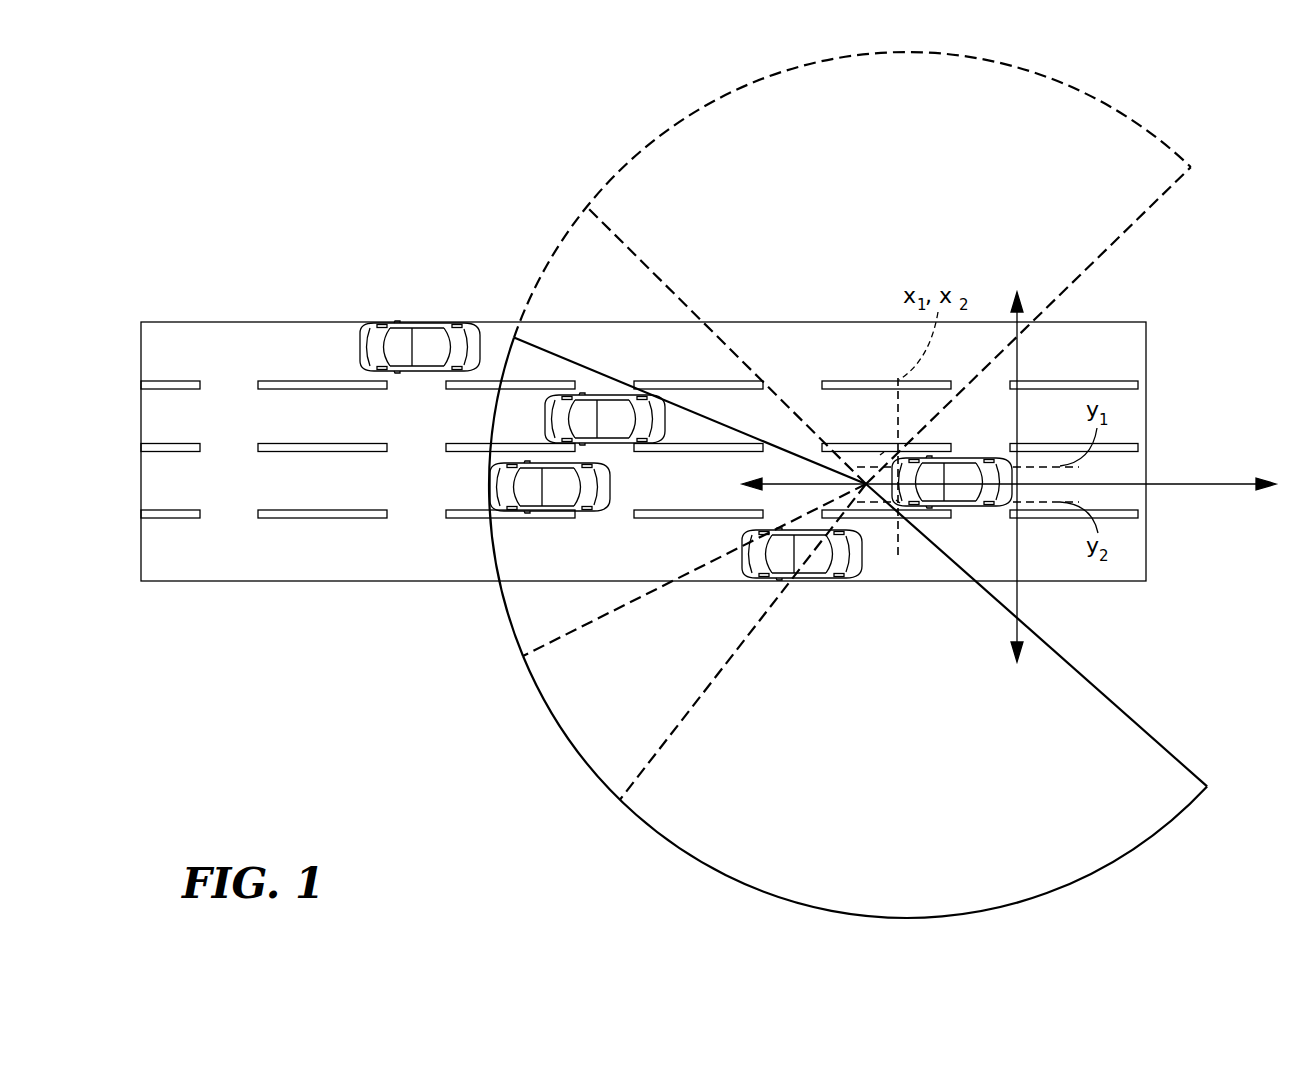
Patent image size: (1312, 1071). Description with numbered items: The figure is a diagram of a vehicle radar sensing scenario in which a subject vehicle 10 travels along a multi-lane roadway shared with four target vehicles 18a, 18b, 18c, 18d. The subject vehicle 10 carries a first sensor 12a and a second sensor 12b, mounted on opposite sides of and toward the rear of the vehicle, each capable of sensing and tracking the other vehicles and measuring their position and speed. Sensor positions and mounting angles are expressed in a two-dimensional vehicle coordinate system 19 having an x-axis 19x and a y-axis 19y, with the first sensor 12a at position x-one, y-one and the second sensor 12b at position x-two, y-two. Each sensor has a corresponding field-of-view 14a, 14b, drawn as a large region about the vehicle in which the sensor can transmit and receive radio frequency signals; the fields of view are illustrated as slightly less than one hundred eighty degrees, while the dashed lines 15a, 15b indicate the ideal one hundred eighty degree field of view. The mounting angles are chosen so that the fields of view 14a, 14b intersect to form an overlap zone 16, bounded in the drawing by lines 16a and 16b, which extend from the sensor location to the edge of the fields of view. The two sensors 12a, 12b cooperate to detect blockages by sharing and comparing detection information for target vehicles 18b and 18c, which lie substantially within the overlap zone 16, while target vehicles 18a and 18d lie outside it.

The subject vehicle 10 is at (1013, 503).
The first sensor 12a is at (880, 455).
The second sensor 12b is at (896, 500).
The field-of-view of first sensor 14a is at (955, 124).
The field-of-view of second sensor 14b is at (955, 861).
The dashed line indicating 180 degree FOV 15a is at (725, 670).
The dashed line indicating 180 degree FOV 15b is at (667, 279).
The overlap zone 16 is at (560, 619).
The upper boundary of region 16 16a is at (765, 437).
The lower boundary of region 16 16b is at (610, 615).
The target vehicle 18a is at (845, 574).
The target vehicle 18b is at (503, 485).
The target vehicle 18c is at (650, 424).
The target vehicle 18d is at (365, 343).
The vehicle coordinate system 19 is at (1019, 461).
The x-axis 19x is at (1172, 484).
The y-axis 19y is at (1020, 365).